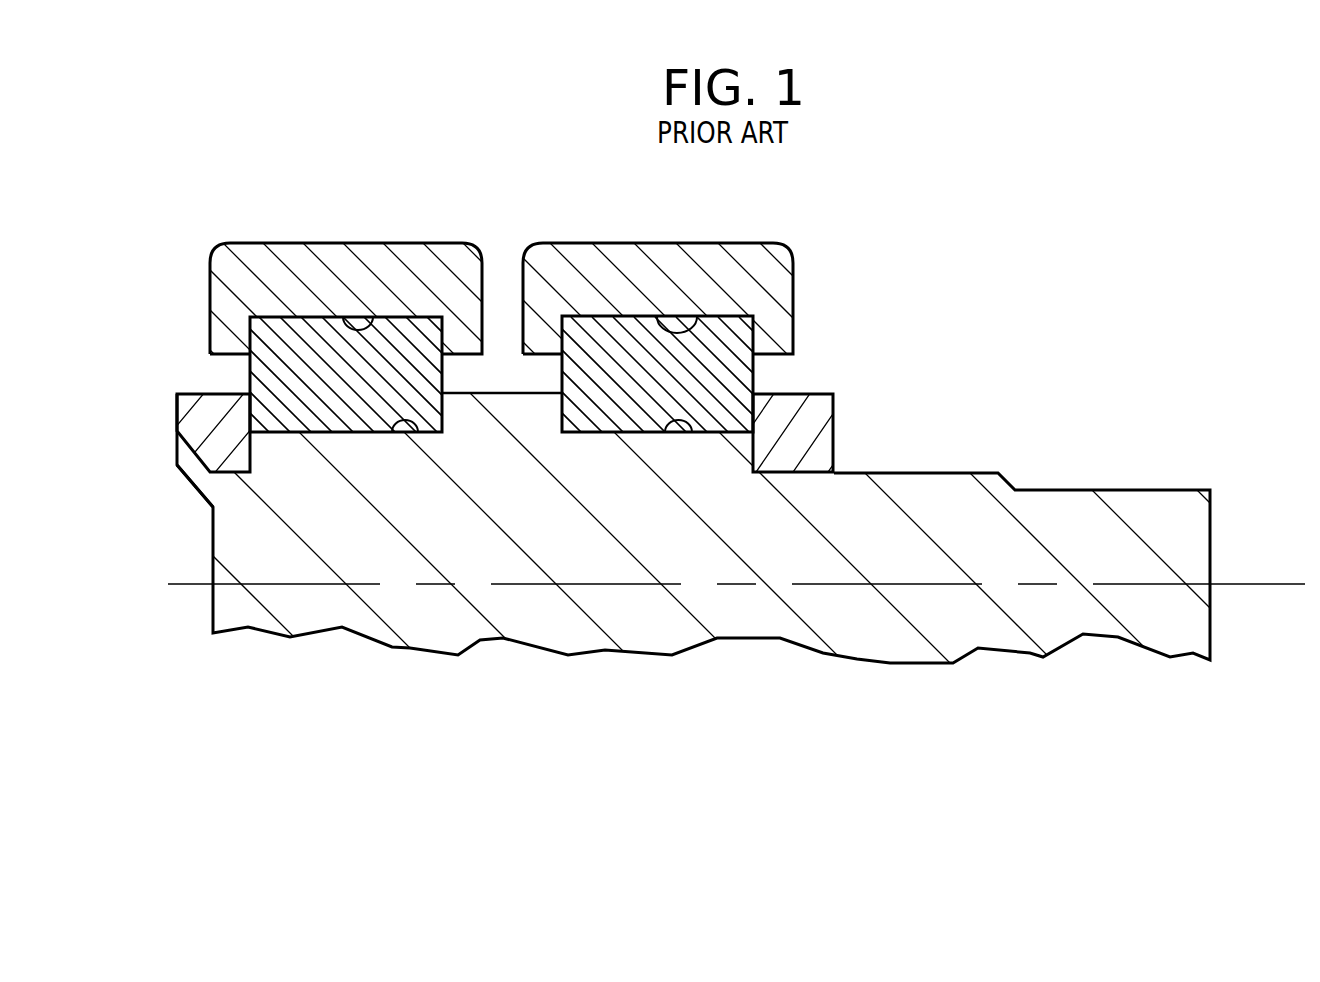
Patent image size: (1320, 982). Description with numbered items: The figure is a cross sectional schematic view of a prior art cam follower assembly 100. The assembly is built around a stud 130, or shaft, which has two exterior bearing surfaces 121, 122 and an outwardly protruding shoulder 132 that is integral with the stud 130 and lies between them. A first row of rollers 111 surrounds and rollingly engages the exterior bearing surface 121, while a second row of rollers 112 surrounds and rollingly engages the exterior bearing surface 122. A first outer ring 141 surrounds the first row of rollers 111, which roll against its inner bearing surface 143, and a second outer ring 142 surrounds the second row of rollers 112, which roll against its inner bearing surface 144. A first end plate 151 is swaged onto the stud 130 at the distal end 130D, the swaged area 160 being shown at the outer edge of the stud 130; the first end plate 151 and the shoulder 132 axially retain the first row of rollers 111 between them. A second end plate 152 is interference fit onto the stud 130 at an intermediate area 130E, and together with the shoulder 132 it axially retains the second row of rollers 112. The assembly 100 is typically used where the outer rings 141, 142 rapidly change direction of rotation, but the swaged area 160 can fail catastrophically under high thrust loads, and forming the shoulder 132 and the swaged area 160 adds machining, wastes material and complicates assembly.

The cam follower assembly 100 is at (930, 274).
The first row of rollers 111 is at (316, 413).
The second row of rollers 112 is at (597, 413).
The exterior bearing surface 121 is at (414, 424).
The exterior bearing surface 122 is at (690, 424).
The stud 130 is at (1035, 508).
The distal end 130D is at (213, 562).
The intermediate area 130E is at (797, 512).
The shoulder 132 is at (490, 417).
The first outer ring 141 is at (255, 263).
The second outer ring 142 is at (777, 268).
The inner bearing surface 143 is at (373, 313).
The inner bearing surface 144 is at (697, 315).
The first end plate 151 is at (205, 405).
The second end plate 152 is at (817, 410).
The swaged area 160 is at (193, 468).